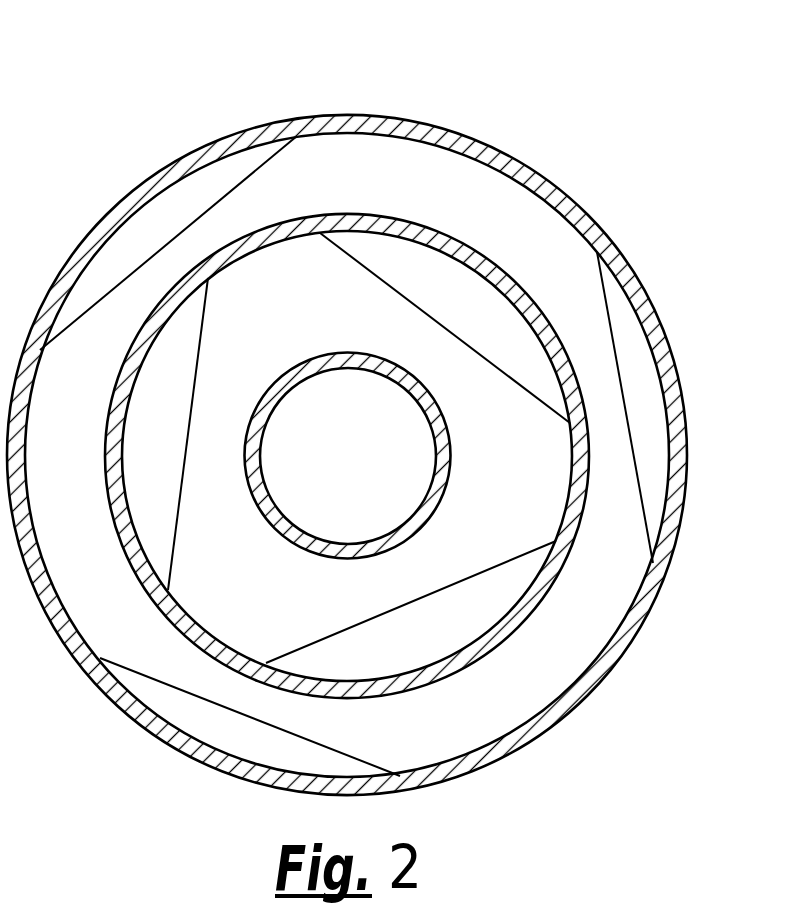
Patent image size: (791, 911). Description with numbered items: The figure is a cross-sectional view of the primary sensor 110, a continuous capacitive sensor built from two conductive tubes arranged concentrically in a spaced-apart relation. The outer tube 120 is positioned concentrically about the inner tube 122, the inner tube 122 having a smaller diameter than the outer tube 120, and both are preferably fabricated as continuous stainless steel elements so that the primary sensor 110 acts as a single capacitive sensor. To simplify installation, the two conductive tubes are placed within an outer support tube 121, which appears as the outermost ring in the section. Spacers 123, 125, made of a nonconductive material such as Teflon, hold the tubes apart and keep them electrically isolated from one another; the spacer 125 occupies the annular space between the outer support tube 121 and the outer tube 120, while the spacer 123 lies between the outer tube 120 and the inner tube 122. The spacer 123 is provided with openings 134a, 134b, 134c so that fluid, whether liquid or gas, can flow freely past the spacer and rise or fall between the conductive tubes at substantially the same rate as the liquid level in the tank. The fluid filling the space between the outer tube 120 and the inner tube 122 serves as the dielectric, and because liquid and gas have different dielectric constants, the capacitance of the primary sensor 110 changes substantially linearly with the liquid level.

The primary sensor 110 is at (193, 100).
The outer tube 120 is at (352, 222).
The outer support tube 121 is at (466, 144).
The inner tube 122 is at (452, 460).
The spacer 123 is at (285, 597).
The spacer 125 is at (100, 504).
The opening 134a is at (457, 292).
The opening 134b is at (175, 347).
The opening 134c is at (432, 622).